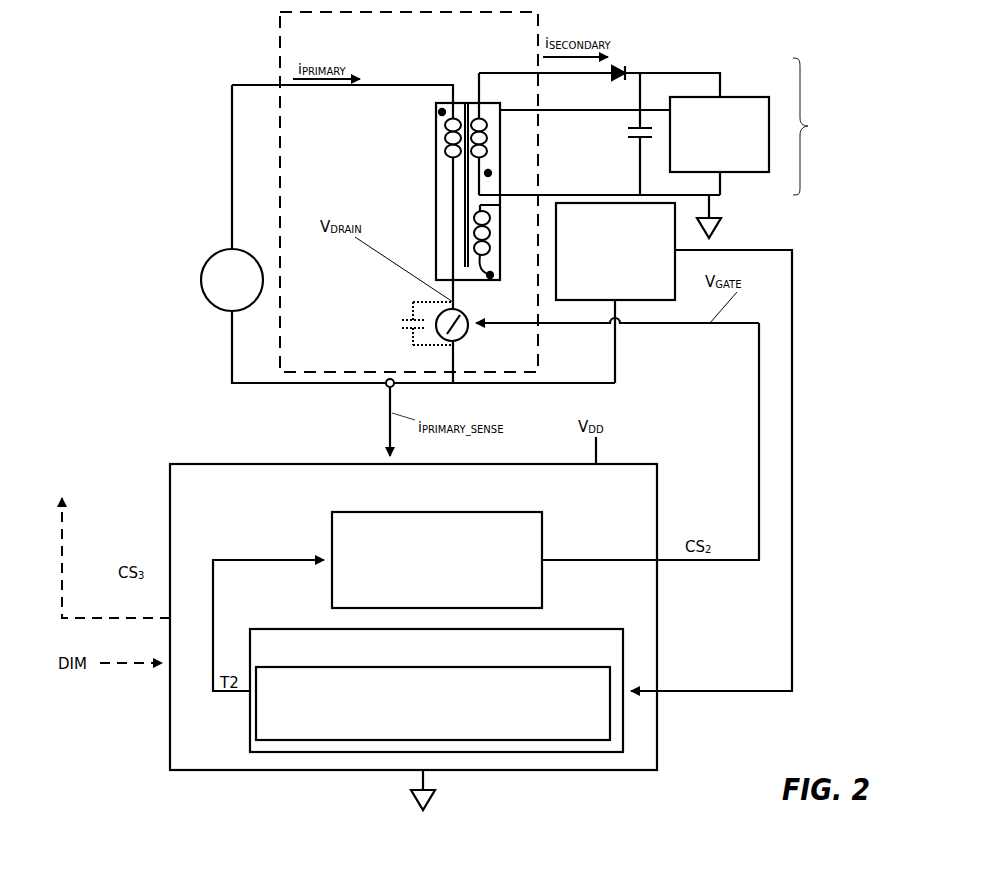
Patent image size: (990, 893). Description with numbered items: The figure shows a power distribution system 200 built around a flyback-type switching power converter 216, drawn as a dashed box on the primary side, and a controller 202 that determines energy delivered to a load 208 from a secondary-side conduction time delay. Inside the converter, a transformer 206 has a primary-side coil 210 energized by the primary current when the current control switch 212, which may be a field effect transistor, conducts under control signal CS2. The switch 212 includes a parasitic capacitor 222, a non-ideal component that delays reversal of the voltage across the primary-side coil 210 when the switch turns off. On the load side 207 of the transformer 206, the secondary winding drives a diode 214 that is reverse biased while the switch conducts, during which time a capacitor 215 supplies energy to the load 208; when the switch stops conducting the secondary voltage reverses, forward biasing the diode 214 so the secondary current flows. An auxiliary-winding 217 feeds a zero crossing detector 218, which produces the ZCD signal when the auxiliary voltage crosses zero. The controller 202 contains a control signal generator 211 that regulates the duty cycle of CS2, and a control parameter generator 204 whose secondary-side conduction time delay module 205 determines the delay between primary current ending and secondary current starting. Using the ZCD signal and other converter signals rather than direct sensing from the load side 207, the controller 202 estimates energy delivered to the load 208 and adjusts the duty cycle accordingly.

The power distribution system 200 is at (920, 133).
The controller 202 is at (208, 258).
The control parameter generator 204 is at (480, 115).
The secondary-side conduction time delay module 205 is at (433, 703).
The transformer 206 is at (466, 103).
The load side 207 is at (839, 126).
The load 208 is at (719, 134).
The primary-side coil 210 is at (436, 135).
The control signal generator 211 is at (437, 560).
The current control switch 212 is at (464, 338).
The diode 214 is at (620, 68).
The capacitor 215 is at (628, 133).
The switching power converter 216 is at (280, 58).
The auxiliary-winding 217 is at (492, 282).
The zero crossing detector 218 is at (674, 447).
The parasitic capacitor 222 is at (404, 318).